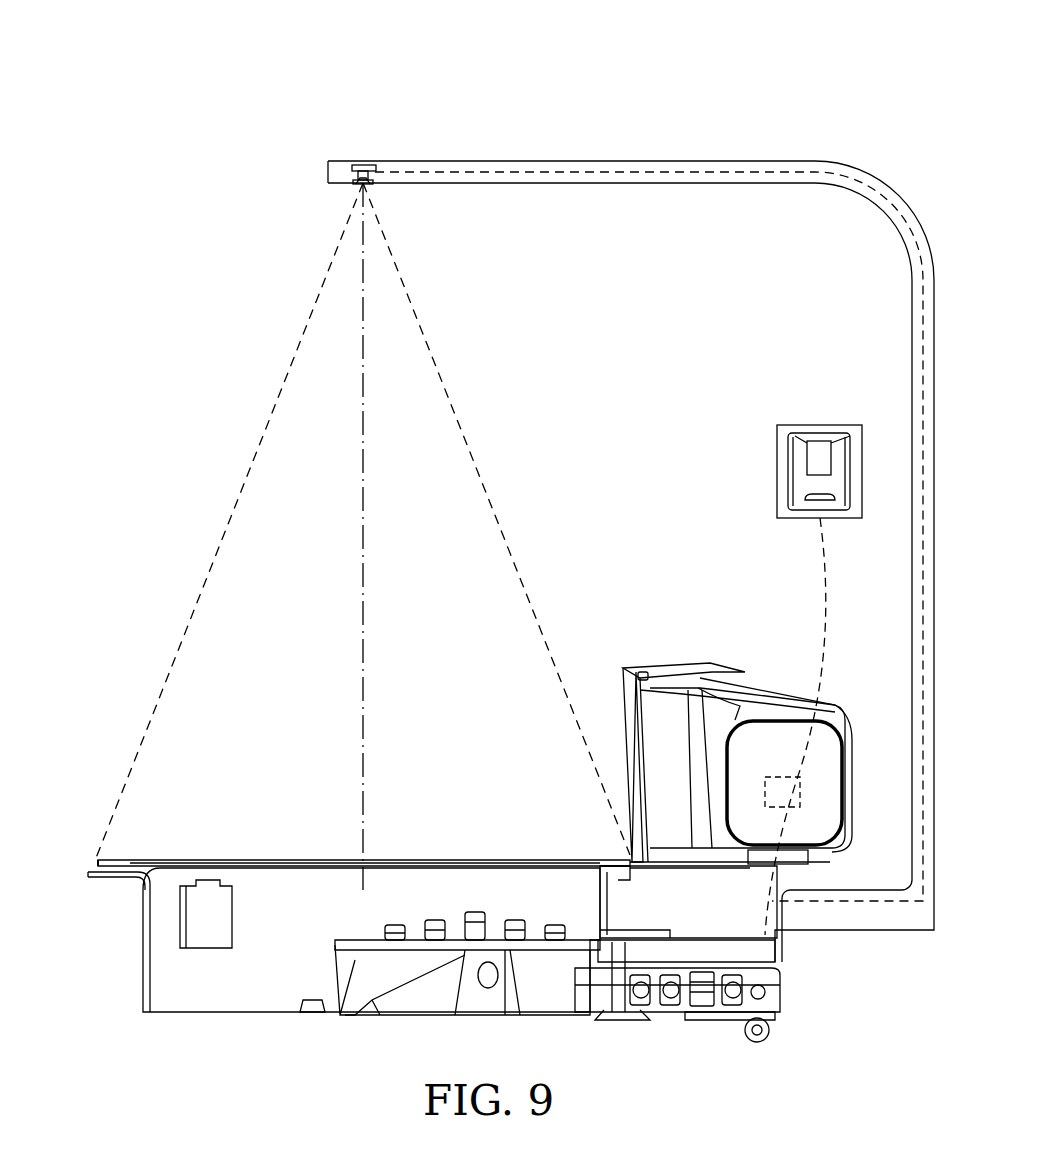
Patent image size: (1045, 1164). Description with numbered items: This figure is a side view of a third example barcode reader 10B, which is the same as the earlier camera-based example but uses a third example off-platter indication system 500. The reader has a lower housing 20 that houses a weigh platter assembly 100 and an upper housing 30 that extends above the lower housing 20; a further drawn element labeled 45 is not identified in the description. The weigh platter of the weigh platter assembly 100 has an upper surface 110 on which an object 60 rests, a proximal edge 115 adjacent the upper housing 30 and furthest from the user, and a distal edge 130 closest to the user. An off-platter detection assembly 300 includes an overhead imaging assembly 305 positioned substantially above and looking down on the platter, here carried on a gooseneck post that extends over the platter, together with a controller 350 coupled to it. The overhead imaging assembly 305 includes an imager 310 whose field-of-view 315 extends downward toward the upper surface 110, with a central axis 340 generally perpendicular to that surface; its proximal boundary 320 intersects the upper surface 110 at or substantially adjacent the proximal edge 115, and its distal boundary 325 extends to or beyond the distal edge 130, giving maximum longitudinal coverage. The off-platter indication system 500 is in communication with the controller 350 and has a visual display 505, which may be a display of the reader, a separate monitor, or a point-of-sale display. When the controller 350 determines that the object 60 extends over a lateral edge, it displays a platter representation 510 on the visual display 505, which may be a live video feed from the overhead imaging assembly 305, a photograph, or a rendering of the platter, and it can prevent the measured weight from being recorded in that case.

The barcode reader 10B is at (228, 88).
The lower housing 20 is at (143, 980).
The upper housing 30 is at (737, 726).
The chair base 45 is at (716, 900).
The object 60 is at (688, 158).
The weigh platter assembly 100 is at (252, 858).
The upper surface 110 is at (183, 860).
The proximal edge 115 is at (628, 860).
The distal edge 130 is at (96, 862).
The off-platter detection assembly 300 is at (365, 158).
The overhead imaging assembly 305 is at (310, 175).
The imager 310 is at (373, 183).
The field-of-view 315 is at (308, 405).
The proximal boundary 320 is at (500, 513).
The distal boundary 325 is at (228, 520).
The central axis 340 is at (362, 530).
The controller 350 is at (778, 777).
The off-platter indication system 500 is at (779, 441).
The visual display 505 is at (777, 443).
The platter representation 510 is at (810, 487).